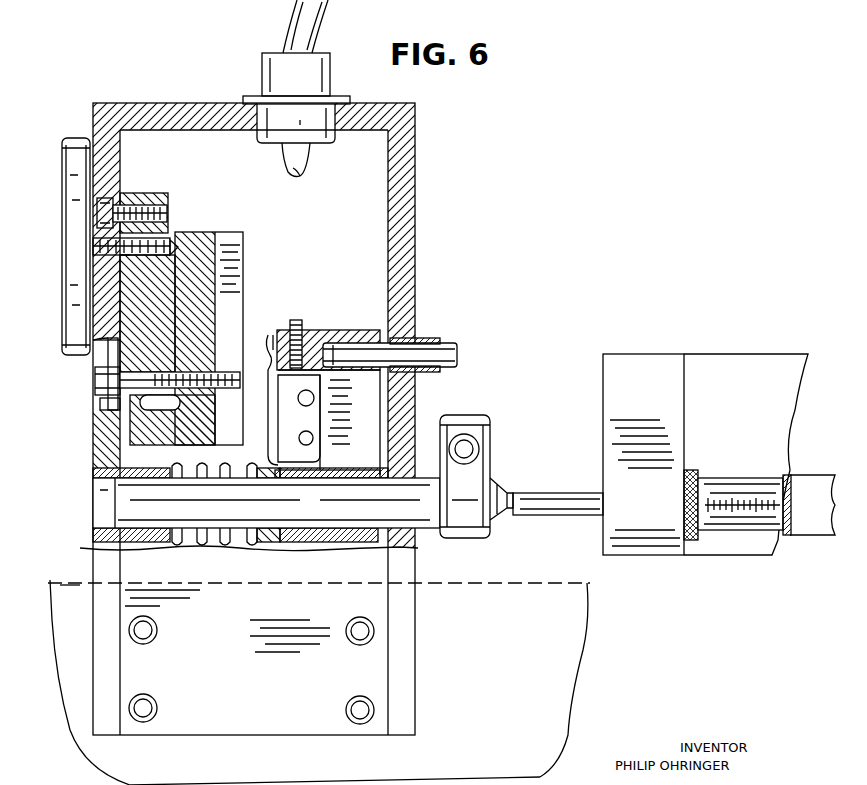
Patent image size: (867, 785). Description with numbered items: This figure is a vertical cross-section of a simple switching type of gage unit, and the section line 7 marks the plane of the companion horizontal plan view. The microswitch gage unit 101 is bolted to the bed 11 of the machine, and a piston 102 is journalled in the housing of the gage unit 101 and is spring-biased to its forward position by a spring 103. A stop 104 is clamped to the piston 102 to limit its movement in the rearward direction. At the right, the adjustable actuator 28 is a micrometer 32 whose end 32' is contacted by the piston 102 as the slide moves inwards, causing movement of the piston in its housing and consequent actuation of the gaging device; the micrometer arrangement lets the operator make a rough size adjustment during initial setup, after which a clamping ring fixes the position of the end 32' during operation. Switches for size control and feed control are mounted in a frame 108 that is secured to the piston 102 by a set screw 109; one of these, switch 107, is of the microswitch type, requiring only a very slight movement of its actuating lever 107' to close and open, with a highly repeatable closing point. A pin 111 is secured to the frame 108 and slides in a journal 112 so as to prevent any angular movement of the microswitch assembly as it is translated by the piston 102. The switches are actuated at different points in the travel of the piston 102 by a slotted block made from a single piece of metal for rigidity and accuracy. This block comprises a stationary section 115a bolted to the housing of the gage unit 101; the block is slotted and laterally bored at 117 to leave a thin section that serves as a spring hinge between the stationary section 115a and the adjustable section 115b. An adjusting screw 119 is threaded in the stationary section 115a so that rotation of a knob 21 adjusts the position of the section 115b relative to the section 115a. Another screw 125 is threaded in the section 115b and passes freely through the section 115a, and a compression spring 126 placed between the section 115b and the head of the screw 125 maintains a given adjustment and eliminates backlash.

The section line 7 is at (50, 102).
The bed 11 is at (570, 641).
The adjusting knob 21 is at (73, 203).
The adjustable actuator 28 is at (686, 593).
The micrometer 32 is at (766, 527).
The end of the micrometer 32' is at (556, 488).
The microswitch gage unit 101 is at (410, 278).
The piston 102 is at (428, 518).
The spring 103 is at (209, 546).
The stop 104 is at (485, 400).
The switch 107 is at (329, 425).
The actuating lever 107' is at (265, 398).
The frame 108 is at (335, 330).
The set screw 109 is at (318, 545).
The pin 111 is at (365, 345).
The journal 112 is at (420, 339).
The stationary section 115a is at (118, 340).
The section 115b is at (192, 240).
The lateral bore 117 is at (140, 405).
The adjusting screw 119 is at (165, 208).
The screw 125 is at (100, 382).
The compression spring 126 is at (118, 405).